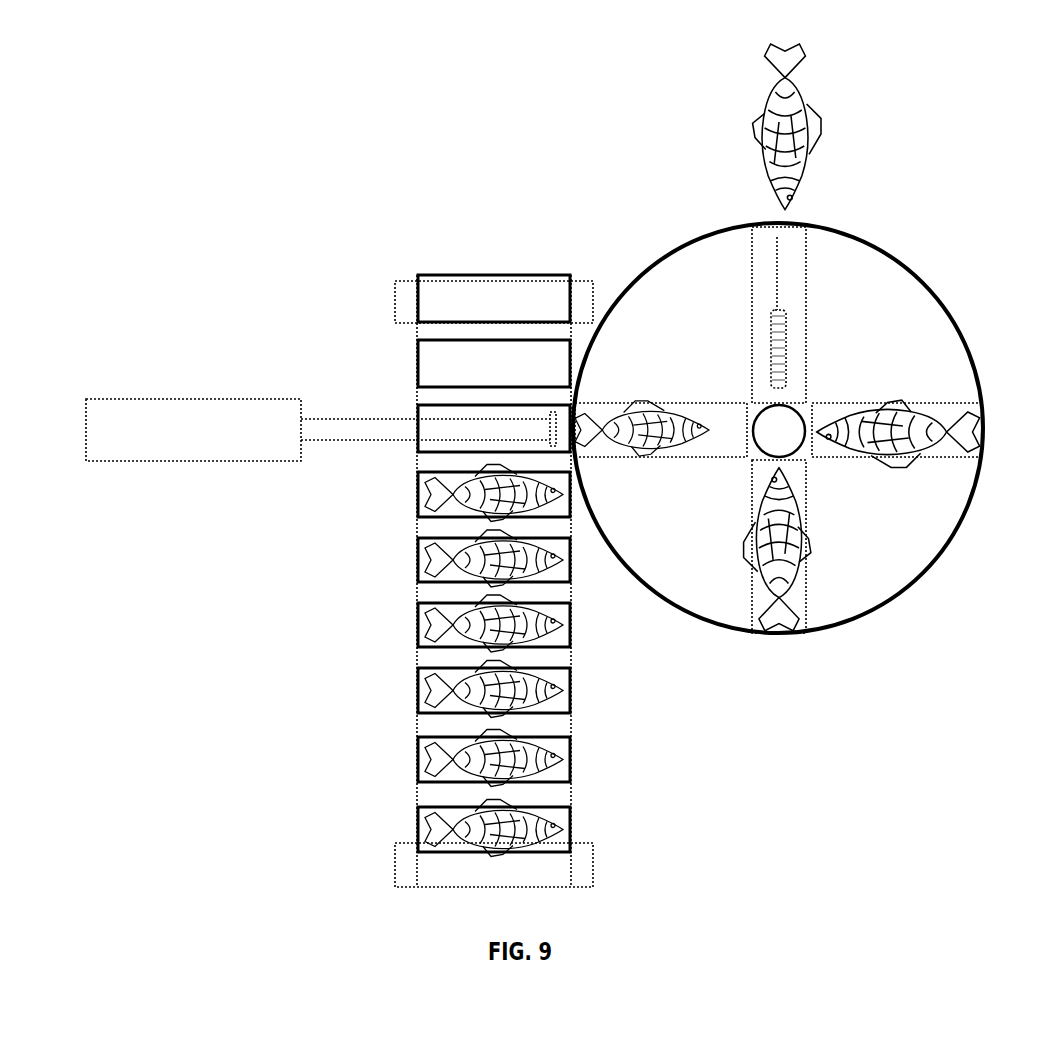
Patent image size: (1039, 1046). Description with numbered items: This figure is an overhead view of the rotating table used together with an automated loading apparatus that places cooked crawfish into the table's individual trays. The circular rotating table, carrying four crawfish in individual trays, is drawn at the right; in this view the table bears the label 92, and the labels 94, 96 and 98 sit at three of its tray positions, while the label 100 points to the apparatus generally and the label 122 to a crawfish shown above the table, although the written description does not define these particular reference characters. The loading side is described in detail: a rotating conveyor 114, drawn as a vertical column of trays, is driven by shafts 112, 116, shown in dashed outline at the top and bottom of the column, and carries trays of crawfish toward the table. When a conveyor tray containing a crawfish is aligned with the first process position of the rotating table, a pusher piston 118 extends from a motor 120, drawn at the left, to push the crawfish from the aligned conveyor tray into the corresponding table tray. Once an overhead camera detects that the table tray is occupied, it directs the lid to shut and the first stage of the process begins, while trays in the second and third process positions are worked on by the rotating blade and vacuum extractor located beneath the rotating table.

The rotary turntable 92 is at (653, 614).
The first compartment 94 is at (679, 396).
The second compartment 96 is at (747, 507).
The third compartment 98 is at (881, 466).
The fish processing system 100 is at (212, 301).
The shaft 112 is at (399, 332).
The rotating conveyor 114 is at (407, 756).
The shaft 116 is at (597, 855).
The pusher piston 118 is at (344, 452).
The motor 120 is at (187, 470).
The fish 122 is at (754, 155).